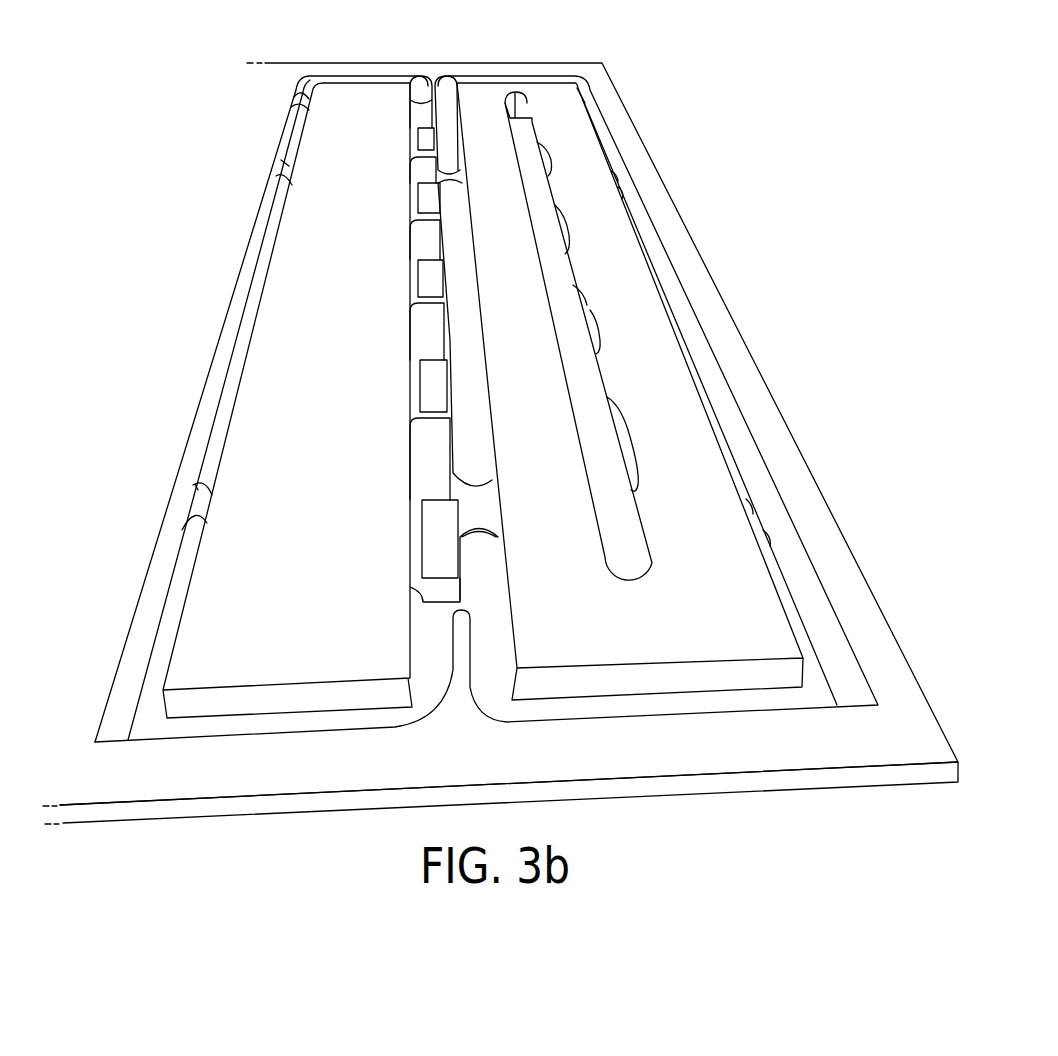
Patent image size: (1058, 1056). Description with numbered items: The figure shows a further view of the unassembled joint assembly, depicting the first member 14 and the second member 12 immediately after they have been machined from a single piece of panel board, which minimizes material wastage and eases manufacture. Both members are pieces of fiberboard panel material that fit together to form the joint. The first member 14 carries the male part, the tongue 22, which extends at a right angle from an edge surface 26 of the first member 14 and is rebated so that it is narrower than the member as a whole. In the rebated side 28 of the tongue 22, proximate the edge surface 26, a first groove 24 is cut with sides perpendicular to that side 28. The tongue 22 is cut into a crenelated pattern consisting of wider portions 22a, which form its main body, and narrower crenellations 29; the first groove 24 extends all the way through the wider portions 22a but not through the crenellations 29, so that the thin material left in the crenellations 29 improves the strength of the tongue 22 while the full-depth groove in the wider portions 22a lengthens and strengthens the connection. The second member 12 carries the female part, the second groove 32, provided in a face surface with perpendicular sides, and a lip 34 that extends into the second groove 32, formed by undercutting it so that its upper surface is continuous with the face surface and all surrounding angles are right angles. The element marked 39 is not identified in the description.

The second member 12 is at (705, 502).
The first member 14 is at (311, 148).
The tongue 22 is at (432, 474).
The wider portions 22a is at (409, 142).
The first groove 24 is at (401, 277).
The edge surface 26 is at (432, 388).
The side of the tongue 28 is at (428, 426).
The crenellations 29 is at (407, 329).
The second groove 32 is at (511, 85).
The lip 34 is at (607, 367).
The detent teeth 39 is at (606, 308).